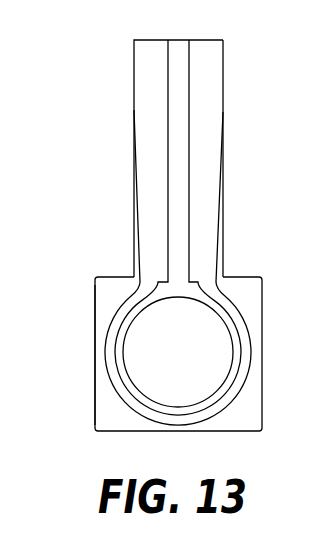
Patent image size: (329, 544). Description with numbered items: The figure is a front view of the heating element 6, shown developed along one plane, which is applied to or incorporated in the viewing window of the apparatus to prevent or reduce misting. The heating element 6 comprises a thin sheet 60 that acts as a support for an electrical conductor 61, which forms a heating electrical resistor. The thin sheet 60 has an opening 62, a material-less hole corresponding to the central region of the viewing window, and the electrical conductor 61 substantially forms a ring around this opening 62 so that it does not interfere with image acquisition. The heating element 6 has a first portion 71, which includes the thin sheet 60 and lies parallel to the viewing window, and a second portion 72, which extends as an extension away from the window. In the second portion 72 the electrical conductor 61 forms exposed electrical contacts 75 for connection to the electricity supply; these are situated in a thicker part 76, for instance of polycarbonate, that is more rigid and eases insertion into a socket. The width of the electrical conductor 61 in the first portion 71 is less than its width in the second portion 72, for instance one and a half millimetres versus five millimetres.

The heating element 6 is at (179, 221).
The thin sheet 60 is at (270, 296).
The electrical conductor 61 is at (155, 204).
The opening 62 is at (185, 358).
The first portion 71 is at (87, 331).
The second portion 72 is at (232, 178).
The electrical contacts 75 is at (157, 59).
The thicker part 76 is at (128, 73).